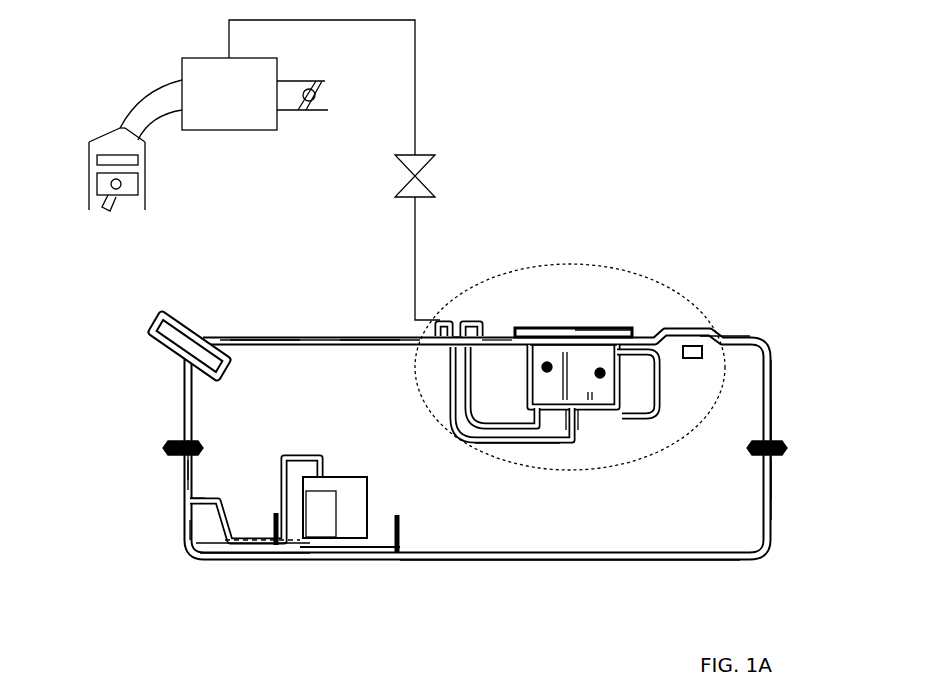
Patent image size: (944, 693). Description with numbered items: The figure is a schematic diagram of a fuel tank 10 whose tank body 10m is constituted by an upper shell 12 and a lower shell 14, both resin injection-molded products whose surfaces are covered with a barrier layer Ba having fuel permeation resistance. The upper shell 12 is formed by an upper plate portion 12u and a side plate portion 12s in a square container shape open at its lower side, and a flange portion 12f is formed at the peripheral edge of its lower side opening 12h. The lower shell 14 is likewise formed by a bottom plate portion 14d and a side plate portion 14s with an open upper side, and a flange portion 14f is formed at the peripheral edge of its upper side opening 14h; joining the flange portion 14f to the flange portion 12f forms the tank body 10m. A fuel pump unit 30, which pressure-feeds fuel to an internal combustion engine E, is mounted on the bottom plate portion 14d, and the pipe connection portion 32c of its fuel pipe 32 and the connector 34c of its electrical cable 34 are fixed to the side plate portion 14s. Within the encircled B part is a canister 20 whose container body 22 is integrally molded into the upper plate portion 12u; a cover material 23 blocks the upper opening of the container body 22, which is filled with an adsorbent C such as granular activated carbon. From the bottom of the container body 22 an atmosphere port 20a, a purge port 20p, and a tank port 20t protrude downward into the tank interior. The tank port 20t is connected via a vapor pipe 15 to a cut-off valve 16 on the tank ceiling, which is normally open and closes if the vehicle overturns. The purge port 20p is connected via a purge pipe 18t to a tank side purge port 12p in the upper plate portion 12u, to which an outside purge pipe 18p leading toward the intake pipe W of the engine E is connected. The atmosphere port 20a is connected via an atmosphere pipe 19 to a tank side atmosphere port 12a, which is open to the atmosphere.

The internal combustion engine E is at (160, 88).
The intake pipe W is at (225, 110).
The outside purge pipe 18p is at (415, 215).
The lower shell 14 is at (485, 565).
The bottom plate portion 14d is at (570, 563).
The side plate portion 14s is at (773, 518).
The upper side opening 14h is at (200, 468).
The flange portion 14f is at (178, 458).
The fuel tank 10 is at (325, 330).
The tank body 10m is at (278, 333).
The upper shell 12 is at (373, 333).
The upper plate portion 12u is at (497, 340).
The side plate portion 12s is at (775, 375).
The flange portion 12f is at (168, 440).
The lower side opening 12h is at (760, 438).
The tank side purge port 12p is at (448, 325).
The tank side atmosphere port 12a is at (477, 335).
The B part B is at (650, 265).
The barrier layer Ba is at (748, 338).
The canister 20 is at (560, 325).
The cover material 23 is at (590, 328).
The container body 22 is at (615, 345).
The adsorbent C is at (598, 355).
The atmosphere pipe 19 is at (467, 430).
The purge pipe 18t is at (503, 445).
The atmosphere port 20a is at (527, 415).
The purge port 20p is at (583, 420).
The tank port 20t is at (600, 423).
The vapor pipe 15 is at (655, 410).
The cut-off valve 16 is at (692, 358).
The fuel pump unit 30 is at (352, 477).
The fuel pipe 32 is at (277, 498).
The pipe connection portion 32c is at (172, 492).
The electrical cable 34 is at (238, 562).
The connector 34c is at (172, 522).